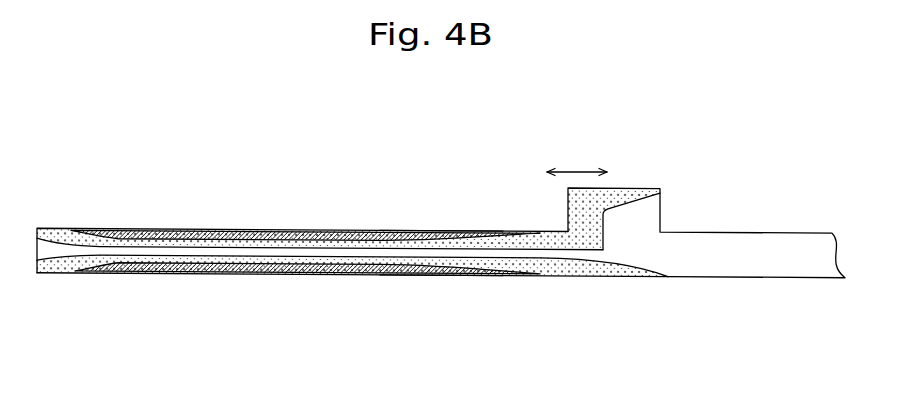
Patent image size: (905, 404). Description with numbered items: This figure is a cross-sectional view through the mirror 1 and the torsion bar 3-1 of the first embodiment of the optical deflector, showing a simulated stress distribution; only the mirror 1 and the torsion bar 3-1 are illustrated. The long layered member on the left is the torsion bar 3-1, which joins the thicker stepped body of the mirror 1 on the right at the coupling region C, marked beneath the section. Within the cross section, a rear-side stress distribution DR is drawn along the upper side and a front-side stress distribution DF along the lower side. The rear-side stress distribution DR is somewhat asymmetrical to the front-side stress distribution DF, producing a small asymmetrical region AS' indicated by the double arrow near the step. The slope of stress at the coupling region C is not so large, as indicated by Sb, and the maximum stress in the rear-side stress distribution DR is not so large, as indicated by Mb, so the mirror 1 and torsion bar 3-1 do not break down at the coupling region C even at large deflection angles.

The torsion bar 3-1 is at (527, 147).
The mirror 1 is at (535, 148).
The asymmetrical region AS' is at (617, 160).
The rear-side stress distribution DR is at (434, 204).
The maximum stress in the rear-side stress distribution Mb is at (504, 222).
The slope of stress at the coupling region Sb is at (544, 224).
The coupling region C is at (660, 300).
The front-side stress distribution DF is at (433, 299).